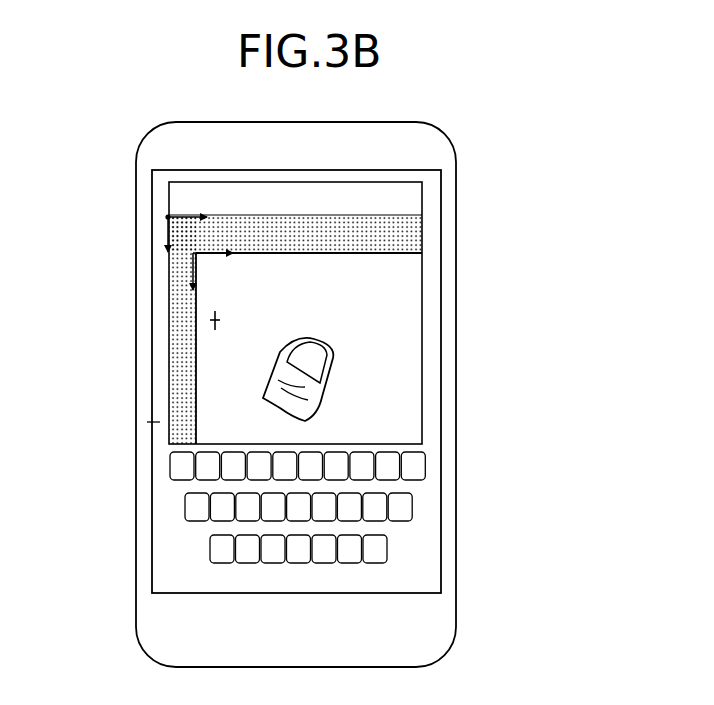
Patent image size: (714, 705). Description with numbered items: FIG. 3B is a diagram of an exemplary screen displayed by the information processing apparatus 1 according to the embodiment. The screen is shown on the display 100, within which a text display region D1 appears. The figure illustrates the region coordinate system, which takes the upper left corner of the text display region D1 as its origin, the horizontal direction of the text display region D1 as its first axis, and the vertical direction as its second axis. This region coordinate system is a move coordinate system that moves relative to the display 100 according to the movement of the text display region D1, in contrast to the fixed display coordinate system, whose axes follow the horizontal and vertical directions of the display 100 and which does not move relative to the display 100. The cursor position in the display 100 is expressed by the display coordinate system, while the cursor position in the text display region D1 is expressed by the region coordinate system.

The information processing apparatus 1 is at (372, 122).
The display 100 is at (441, 190).
The text display region D1 is at (197, 396).